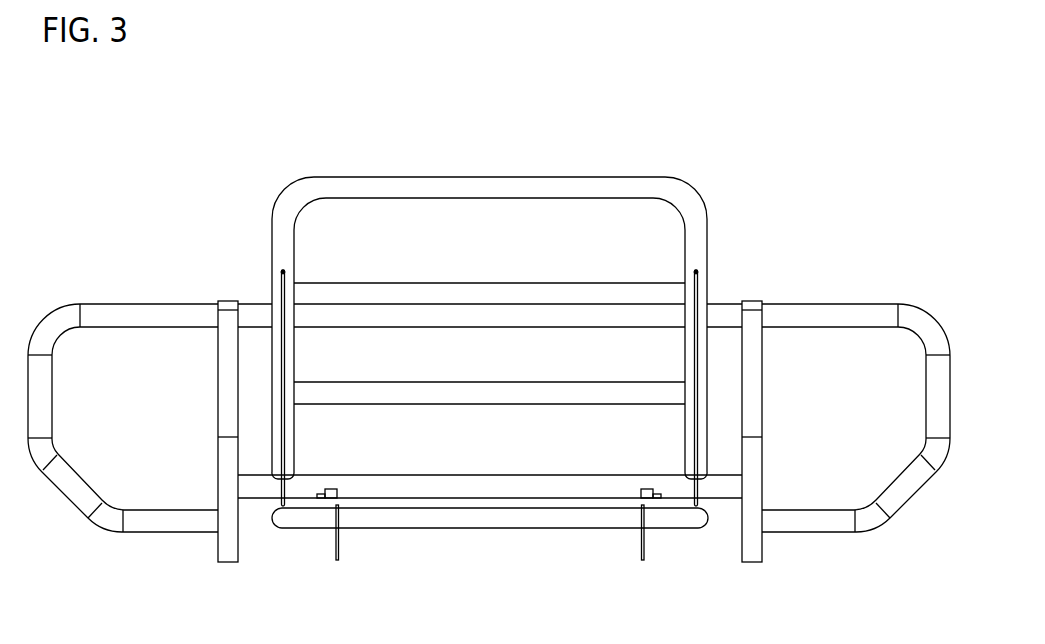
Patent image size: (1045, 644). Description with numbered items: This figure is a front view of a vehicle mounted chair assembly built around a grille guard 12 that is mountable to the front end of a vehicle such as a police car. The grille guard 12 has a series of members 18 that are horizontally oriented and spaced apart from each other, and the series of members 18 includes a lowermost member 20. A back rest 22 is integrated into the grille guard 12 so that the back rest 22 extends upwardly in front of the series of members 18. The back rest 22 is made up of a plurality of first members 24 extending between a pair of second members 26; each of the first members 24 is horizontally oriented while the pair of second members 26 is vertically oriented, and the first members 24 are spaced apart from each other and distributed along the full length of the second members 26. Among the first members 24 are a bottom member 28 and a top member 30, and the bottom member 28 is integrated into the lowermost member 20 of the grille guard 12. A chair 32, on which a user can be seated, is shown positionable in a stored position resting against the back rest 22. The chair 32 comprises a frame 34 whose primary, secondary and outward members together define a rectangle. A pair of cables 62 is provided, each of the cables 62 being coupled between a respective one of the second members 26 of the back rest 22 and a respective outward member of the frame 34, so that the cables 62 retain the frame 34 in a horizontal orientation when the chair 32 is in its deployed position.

The grille guard 12 is at (70, 273).
The series of members 18 is at (153, 515).
The lowermost member 20 is at (253, 498).
The back rest 22 is at (291, 185).
The first members 24 is at (459, 393).
The second members 26 is at (272, 233).
The bottom member 28 is at (470, 530).
The top member 30 is at (410, 177).
The chair 32 is at (387, 538).
The frame 34 is at (700, 529).
The cables 62 is at (282, 290).